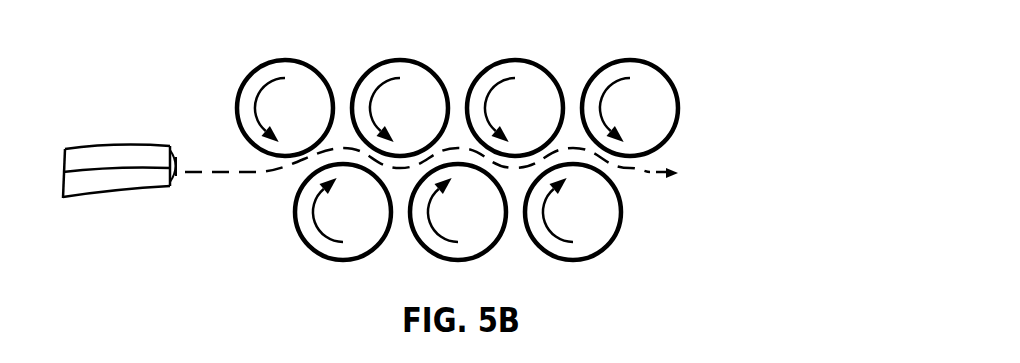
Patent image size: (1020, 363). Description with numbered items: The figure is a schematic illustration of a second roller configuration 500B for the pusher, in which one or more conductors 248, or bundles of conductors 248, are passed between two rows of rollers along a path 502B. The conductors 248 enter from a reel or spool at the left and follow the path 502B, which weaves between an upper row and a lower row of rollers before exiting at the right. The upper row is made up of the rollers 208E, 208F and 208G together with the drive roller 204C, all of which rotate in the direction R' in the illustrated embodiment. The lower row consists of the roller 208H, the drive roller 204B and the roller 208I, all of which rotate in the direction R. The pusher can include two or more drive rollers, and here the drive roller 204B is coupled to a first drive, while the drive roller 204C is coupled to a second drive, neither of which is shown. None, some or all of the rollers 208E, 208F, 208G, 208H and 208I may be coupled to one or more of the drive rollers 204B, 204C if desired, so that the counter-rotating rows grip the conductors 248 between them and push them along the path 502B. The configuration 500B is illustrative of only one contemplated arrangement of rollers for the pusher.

The second roller configuration 500B is at (718, 39).
The conductors 248 is at (139, 130).
The roller 208E is at (244, 104).
The roller 208F is at (367, 88).
The drive roller 204C is at (482, 88).
The roller 208G is at (661, 108).
The roller 208H is at (300, 212).
The drive roller 204B is at (424, 233).
The roller 208I is at (607, 215).
The path 502B is at (644, 172).